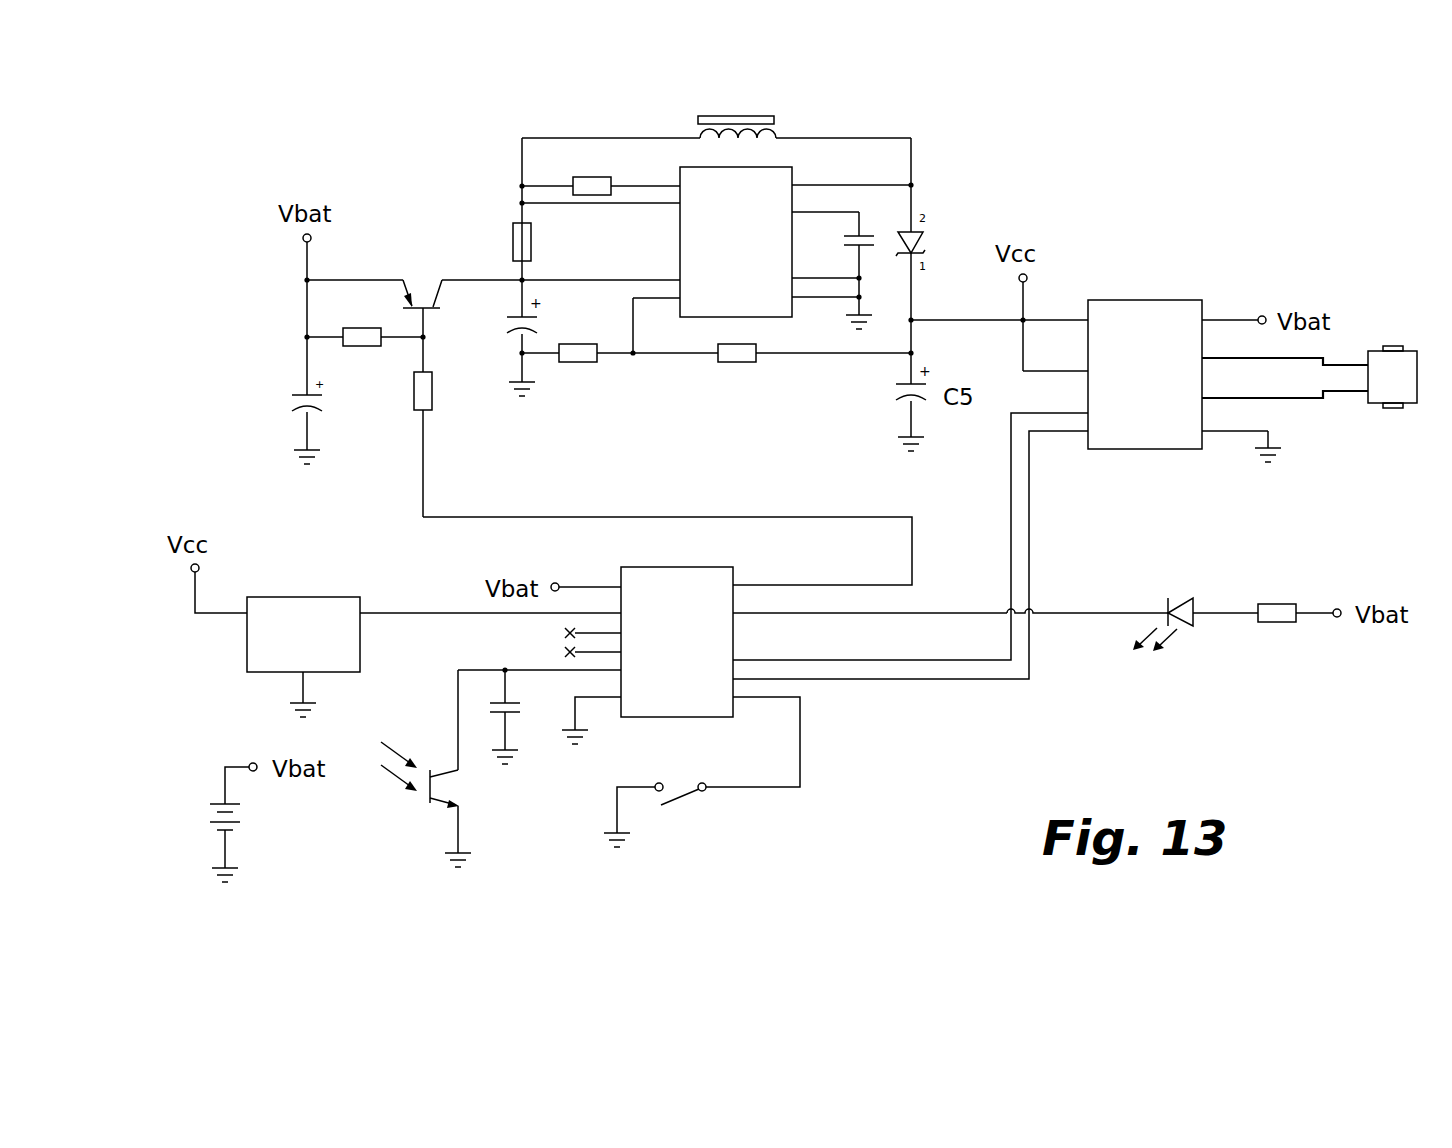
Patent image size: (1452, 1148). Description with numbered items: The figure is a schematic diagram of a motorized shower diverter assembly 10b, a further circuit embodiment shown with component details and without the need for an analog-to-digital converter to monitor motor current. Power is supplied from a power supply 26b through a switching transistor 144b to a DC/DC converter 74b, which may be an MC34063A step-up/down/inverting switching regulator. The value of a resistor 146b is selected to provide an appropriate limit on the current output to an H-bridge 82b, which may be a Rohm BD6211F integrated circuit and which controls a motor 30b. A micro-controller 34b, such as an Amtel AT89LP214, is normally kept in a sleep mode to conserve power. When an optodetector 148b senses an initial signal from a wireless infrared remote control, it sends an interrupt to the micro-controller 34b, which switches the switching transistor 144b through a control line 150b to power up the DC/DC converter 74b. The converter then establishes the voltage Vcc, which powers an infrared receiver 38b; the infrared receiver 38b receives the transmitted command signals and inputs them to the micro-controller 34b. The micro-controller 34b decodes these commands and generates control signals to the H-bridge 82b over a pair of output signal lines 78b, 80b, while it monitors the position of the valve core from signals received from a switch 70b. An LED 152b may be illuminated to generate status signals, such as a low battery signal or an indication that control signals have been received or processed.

The motorized shower diverter assembly 10b is at (371, 127).
The DC/DC converter 74b is at (780, 167).
The switching transistor 144b is at (442, 280).
The resistor 146b is at (531, 258).
The H-bridge 82b is at (1128, 300).
The motor 30b is at (1418, 363).
The control line 150b is at (605, 517).
The micro-controller 34b is at (653, 567).
The infrared receiver 38b is at (247, 642).
The power supply 26b is at (205, 804).
The optodetector 148b is at (430, 803).
The switch 70b is at (704, 791).
The output signal line 78b is at (1011, 507).
The output signal line 80b is at (1029, 507).
The LED 152b is at (1188, 623).